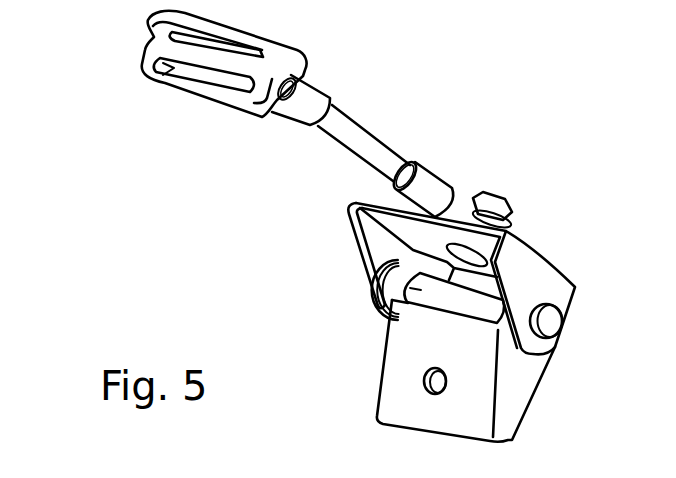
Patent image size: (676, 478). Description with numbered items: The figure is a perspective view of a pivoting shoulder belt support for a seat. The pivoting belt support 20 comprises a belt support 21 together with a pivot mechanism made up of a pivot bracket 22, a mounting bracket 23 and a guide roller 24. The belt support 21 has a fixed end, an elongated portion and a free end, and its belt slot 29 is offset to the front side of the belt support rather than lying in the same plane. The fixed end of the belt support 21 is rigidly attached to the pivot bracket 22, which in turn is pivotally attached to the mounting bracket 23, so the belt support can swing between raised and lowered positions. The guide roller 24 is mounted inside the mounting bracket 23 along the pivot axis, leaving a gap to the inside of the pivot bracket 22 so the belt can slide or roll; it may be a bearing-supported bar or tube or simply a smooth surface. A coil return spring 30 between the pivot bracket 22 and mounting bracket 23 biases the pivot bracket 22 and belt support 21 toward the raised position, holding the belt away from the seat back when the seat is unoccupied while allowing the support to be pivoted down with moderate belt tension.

The pivoting belt support 20 is at (478, 52).
The belt support 21 is at (333, 140).
The pivot bracket 22 is at (530, 272).
The mounting bracket 23 is at (523, 385).
The guide roller 24 is at (366, 285).
The belt slot 29 is at (152, 46).
The coil return spring 30 is at (420, 262).